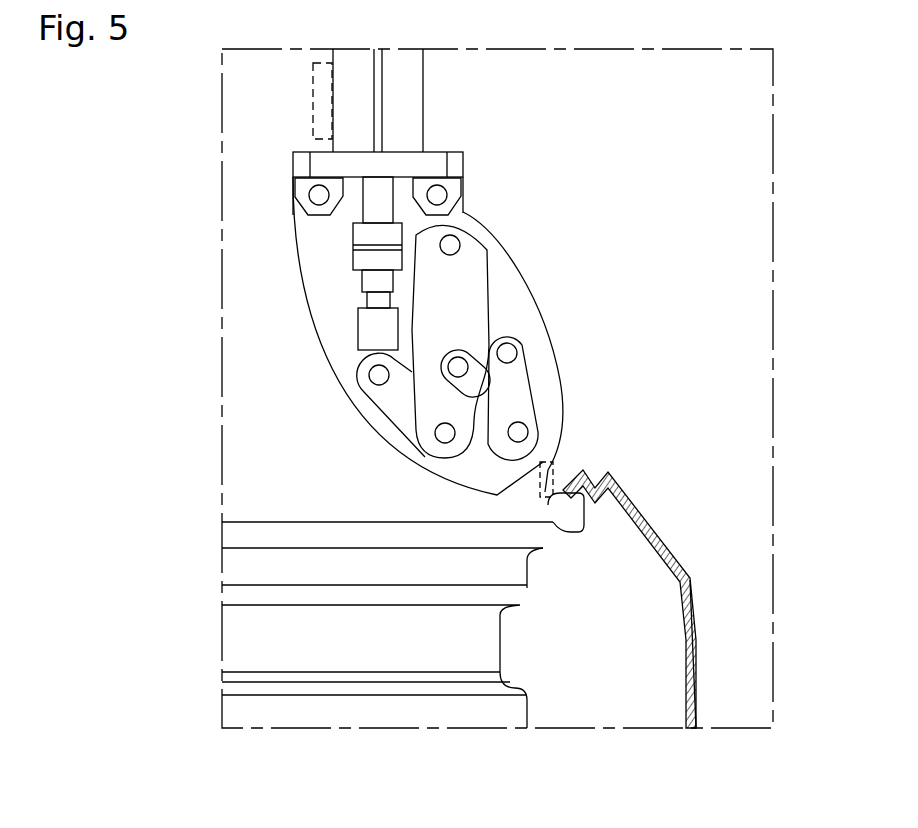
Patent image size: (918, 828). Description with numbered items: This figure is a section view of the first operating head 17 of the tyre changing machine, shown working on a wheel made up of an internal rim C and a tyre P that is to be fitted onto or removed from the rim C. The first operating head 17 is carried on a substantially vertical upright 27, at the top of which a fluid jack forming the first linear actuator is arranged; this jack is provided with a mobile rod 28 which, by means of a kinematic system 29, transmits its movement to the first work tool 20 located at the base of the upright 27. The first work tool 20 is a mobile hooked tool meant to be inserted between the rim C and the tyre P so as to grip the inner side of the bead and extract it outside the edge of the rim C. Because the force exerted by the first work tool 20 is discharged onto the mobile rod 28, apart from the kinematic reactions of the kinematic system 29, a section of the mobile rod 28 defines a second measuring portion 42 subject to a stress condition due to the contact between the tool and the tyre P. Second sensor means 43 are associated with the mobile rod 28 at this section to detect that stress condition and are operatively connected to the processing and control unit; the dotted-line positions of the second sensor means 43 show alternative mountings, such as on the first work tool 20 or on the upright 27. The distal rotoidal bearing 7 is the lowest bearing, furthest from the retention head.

The distal rotoidal bearing 7 is at (607, 472).
The first operating head 17 is at (318, 396).
The first work tool 20 is at (533, 340).
The upright 27 is at (403, 103).
The mobile rod 28 is at (377, 193).
The kinematic system 29 is at (375, 452).
The second measuring portion 42 is at (377, 262).
The second sensor means 43 is at (322, 101).
The rim C is at (298, 638).
The tyre P is at (705, 655).